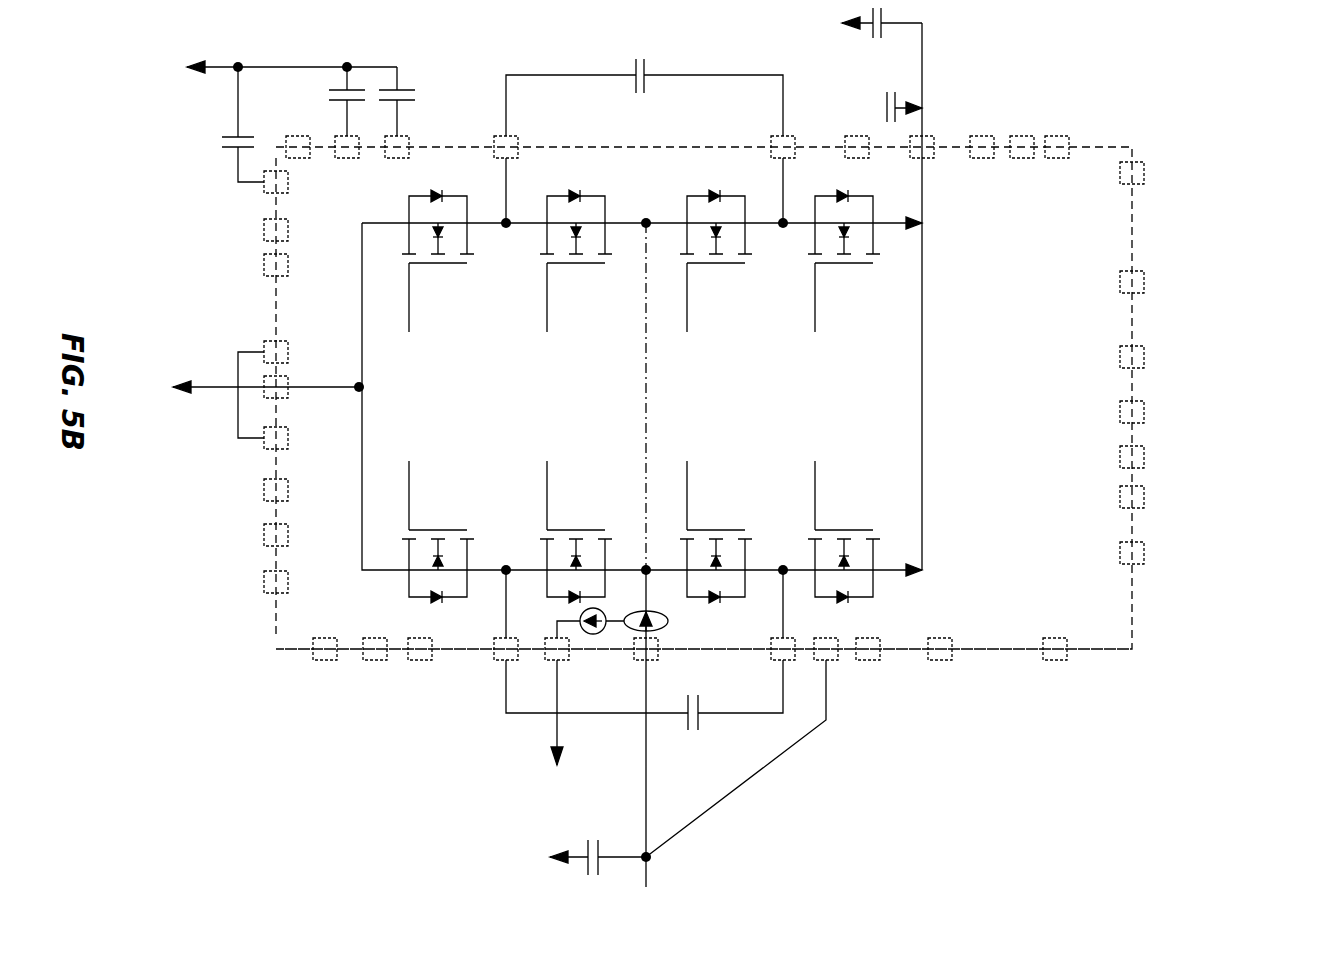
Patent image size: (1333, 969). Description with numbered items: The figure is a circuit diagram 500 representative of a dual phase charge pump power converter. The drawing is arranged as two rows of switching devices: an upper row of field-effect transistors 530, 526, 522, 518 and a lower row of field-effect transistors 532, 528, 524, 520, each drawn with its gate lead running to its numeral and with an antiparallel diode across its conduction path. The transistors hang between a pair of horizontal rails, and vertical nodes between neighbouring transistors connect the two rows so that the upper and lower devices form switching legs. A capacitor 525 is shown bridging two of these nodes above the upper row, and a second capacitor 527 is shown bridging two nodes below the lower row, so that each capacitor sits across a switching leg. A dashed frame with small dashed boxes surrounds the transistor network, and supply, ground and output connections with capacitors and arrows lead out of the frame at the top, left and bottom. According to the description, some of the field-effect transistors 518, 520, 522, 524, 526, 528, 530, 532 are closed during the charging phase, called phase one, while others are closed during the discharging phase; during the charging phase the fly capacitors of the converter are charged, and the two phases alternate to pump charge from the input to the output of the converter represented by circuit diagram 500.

The circuit diagram 500 is at (1240, 108).
The field-effect transistor 518 is at (864, 263).
The field-effect transistor 520 is at (864, 530).
The field-effect transistor 522 is at (736, 263).
The field-effect transistor 524 is at (736, 530).
The capacitor 525 is at (648, 68).
The field-effect transistor 526 is at (596, 263).
The capacitor 527 is at (690, 722).
The field-effect transistor 528 is at (596, 530).
The field-effect transistor 530 is at (458, 263).
The field-effect transistor 532 is at (458, 530).